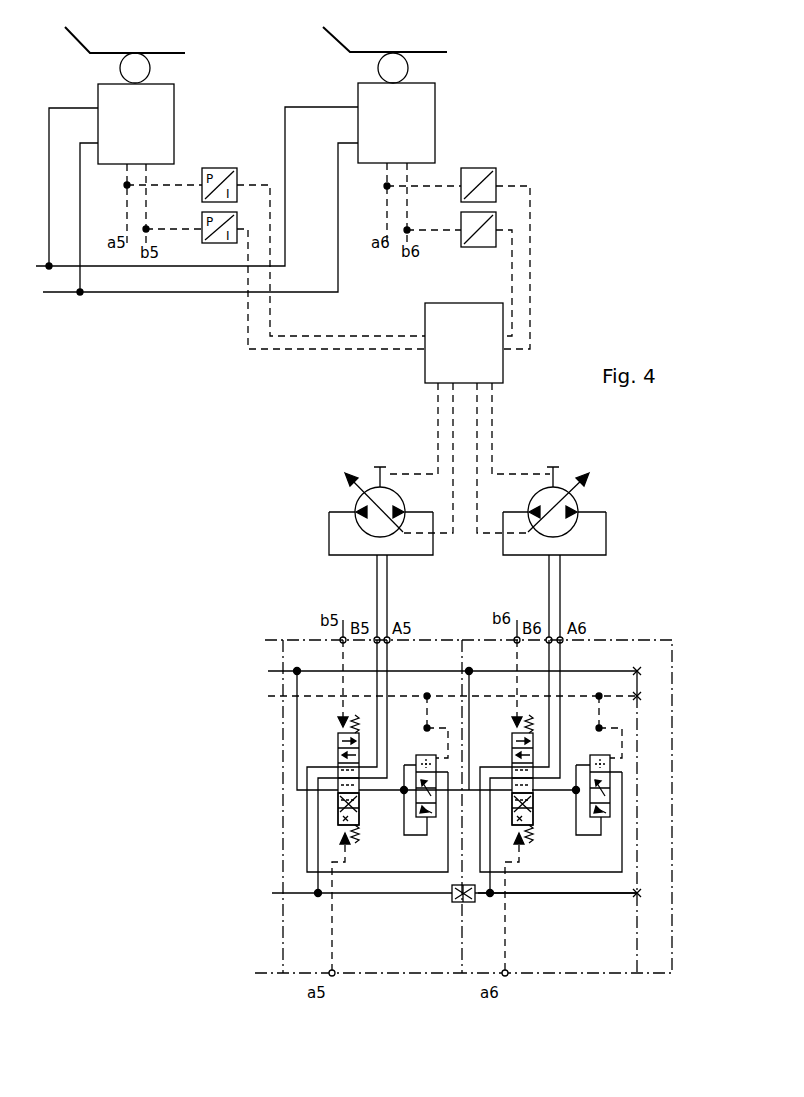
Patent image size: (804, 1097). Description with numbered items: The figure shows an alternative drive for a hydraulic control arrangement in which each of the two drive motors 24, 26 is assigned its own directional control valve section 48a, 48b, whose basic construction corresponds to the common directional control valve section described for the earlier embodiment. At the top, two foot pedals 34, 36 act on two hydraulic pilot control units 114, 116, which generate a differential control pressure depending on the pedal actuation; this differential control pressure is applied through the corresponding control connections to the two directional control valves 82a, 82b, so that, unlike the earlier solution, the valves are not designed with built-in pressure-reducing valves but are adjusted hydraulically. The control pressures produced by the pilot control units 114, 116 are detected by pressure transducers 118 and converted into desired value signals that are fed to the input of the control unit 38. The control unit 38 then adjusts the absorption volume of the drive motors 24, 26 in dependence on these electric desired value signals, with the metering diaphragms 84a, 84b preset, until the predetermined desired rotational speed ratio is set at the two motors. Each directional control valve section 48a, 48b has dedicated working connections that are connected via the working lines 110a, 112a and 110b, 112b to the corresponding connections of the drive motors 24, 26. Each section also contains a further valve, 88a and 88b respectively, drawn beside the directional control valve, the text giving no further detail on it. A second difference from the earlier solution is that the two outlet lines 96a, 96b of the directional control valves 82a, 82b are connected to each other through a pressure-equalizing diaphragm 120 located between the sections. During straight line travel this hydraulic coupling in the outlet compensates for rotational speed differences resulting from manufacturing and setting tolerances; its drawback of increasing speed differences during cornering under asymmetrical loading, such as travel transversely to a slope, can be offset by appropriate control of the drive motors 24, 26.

The foot pedal 34 is at (92, 42).
The foot pedal 36 is at (337, 35).
The pilot control unit 114 is at (145, 129).
The pilot control unit 116 is at (404, 129).
The pressure transducer 118 is at (497, 173).
The control unit 38 is at (477, 354).
The drive motor 26 is at (358, 500).
The drive motor 24 is at (577, 500).
The working line 112b is at (377, 596).
The working line 110b is at (388, 593).
The working line 112a is at (549, 597).
The working line 110a is at (562, 593).
The directional control valve 82a is at (338, 756).
The metering diaphragm 84a is at (338, 815).
The pressure valve 88a is at (418, 812).
The outlet line 96a is at (317, 882).
The directional control valve 82b is at (542, 747).
The metering diaphragm 84b is at (533, 815).
The pressure valve 88b is at (610, 780).
The outlet line 96b is at (490, 855).
The directional control valve section 48a is at (368, 973).
The directional control valve section 48b is at (565, 973).
The pressure-equalizing diaphragm 120 is at (458, 903).